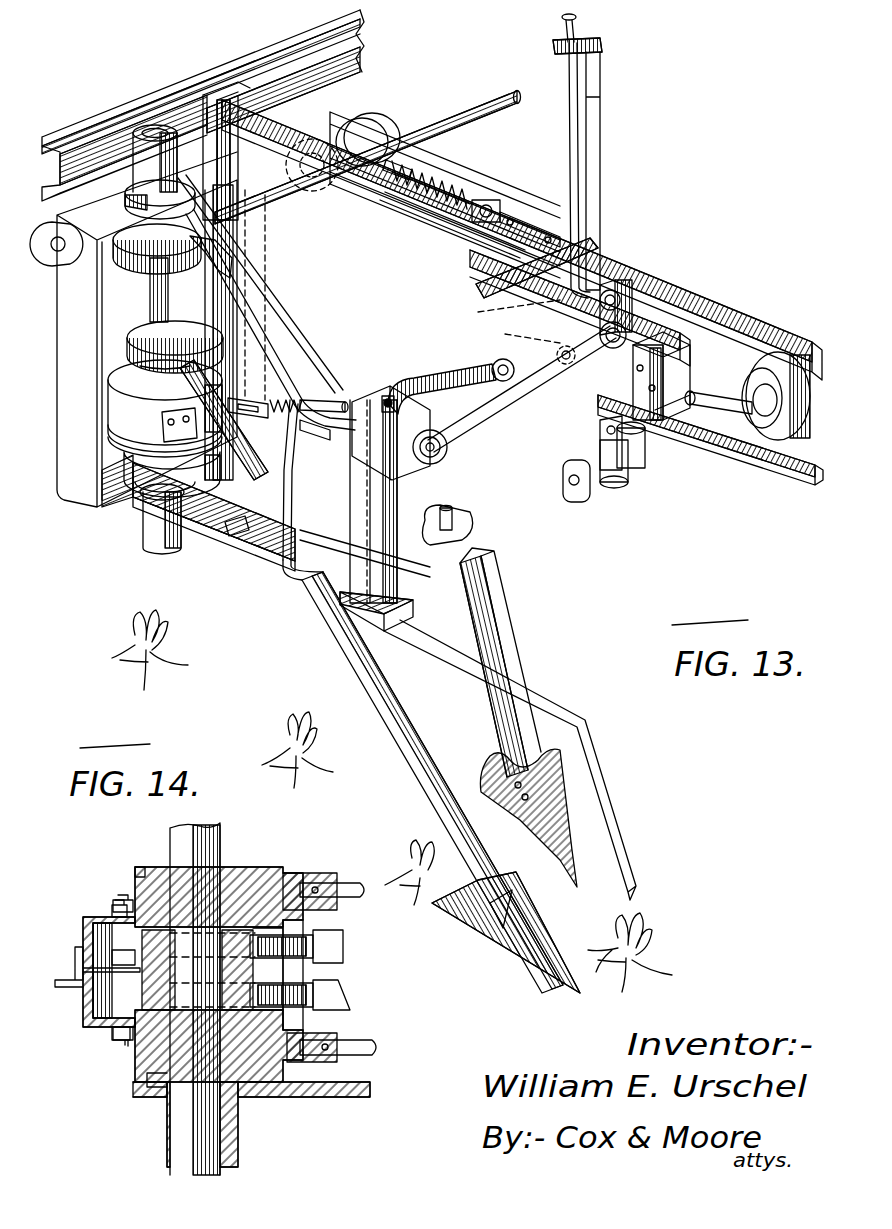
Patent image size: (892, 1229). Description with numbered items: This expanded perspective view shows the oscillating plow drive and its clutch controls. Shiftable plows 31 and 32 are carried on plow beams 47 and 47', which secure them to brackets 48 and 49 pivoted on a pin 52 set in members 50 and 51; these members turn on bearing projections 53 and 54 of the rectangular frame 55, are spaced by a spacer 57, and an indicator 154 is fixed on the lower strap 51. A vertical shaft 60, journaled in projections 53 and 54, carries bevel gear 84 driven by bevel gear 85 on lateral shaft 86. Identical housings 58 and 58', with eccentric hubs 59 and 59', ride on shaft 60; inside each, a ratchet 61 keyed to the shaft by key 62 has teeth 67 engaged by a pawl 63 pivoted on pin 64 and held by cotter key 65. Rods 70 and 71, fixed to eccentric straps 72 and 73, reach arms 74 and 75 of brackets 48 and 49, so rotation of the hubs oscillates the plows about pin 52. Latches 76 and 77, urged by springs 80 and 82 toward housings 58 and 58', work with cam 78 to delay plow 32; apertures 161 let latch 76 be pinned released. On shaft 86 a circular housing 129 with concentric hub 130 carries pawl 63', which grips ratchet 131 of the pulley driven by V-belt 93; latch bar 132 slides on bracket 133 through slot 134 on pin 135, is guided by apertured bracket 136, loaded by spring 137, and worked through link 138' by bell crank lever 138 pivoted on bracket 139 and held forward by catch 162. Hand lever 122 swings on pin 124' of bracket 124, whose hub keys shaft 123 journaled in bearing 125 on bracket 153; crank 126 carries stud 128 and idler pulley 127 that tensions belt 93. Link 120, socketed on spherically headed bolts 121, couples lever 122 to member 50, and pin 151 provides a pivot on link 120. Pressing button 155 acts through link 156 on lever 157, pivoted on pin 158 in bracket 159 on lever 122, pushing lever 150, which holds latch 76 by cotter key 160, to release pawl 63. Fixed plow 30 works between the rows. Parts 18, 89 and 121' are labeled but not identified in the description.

In FIG. 13, the plow 30 is at (76, 134).
In FIG. 13, the circular housing 129 is at (312, 98).
In FIG. 13, the ratchet 131 is at (258, 112).
In FIG. 13, the concentric hub 130 is at (290, 158).
In FIG. 13, the V-belt 93 is at (644, 290).
In FIG. 13, the pin 158 is at (692, 288).
In FIG. 13, the shaft 86 is at (488, 92).
In FIG. 13, the bearing projection 53 is at (140, 148).
In FIG. 13, the bevel gear 85 is at (234, 258).
In FIG. 13, the spring 80 is at (272, 368).
In FIG. 13, the bevel gear 84 is at (130, 260).
In FIG. 13, the shaft 60 is at (150, 304).
In FIG. 14, the shaft 60 is at (216, 832).
In FIG. 13, the eccentric hub 59 is at (163, 341).
In FIG. 14, the eccentric hub 59 is at (219, 874).
In FIG. 13, the eccentric strap 72 is at (140, 368).
In FIG. 14, the eccentric strap 72 is at (136, 900).
In FIG. 13, the housing 58 is at (140, 406).
In FIG. 14, the housing 58 is at (92, 963).
In FIG. 13, the housing 58' is at (138, 438).
In FIG. 14, the housing 58' is at (84, 1009).
In FIG. 13, the cam 78 is at (124, 466).
In FIG. 13, the latch 77 is at (200, 442).
In FIG. 14, the latch 77 is at (352, 996).
In FIG. 13, the rectangular frame 55 is at (78, 492).
In FIG. 13, the member 51 is at (268, 564).
In FIG. 14, the member 51 is at (340, 1098).
In FIG. 13, the spacer 57 is at (264, 552).
In FIG. 13, the rod 70 is at (228, 527).
In FIG. 14, the rod 70 is at (346, 884).
In FIG. 13, the eccentric strap 73 is at (197, 470).
In FIG. 14, the eccentric strap 73 is at (148, 1080).
In FIG. 13, the eccentric hub 59' is at (140, 509).
In FIG. 14, the eccentric hub 59' is at (225, 1069).
In FIG. 13, the bearing projection 54 is at (143, 541).
In FIG. 14, the bearing projection 54 is at (240, 1151).
In FIG. 13, the arm 74 is at (293, 572).
In FIG. 13, the member 50 is at (272, 400).
In FIG. 13, the circular apertures 161 is at (292, 398).
In FIG. 13, the latch 76 is at (316, 382).
In FIG. 14, the latch 76 is at (344, 932).
In FIG. 13, the spring 82 is at (314, 438).
In FIG. 13, the pawl 63' is at (368, 122).
In FIG. 13, the latch bar 132 is at (400, 160).
In FIG. 13, the slot 134 is at (422, 170).
In FIG. 13, the pin 135 is at (440, 180).
In FIG. 13, the apertured bracket 136 is at (480, 204).
In FIG. 13, the link 138' is at (533, 206).
In FIG. 13, the bell crank lever 138 is at (493, 269).
In FIG. 13, the bracket 133 is at (400, 190).
In FIG. 13, the spring 137 is at (443, 200).
In FIG. 13, the button 155 is at (578, 18).
In FIG. 13, the link 156 is at (580, 98).
In FIG. 13, the hand lever 122 is at (601, 134).
In FIG. 13, the lever 157 is at (636, 296).
In FIG. 13, the bracket 159 is at (620, 290).
In FIG. 13, the catch 162 is at (500, 309).
In FIG. 13, the bracket 139 is at (516, 330).
In FIG. 13, the plate 18 is at (668, 322).
In FIG. 14, the plate 18 is at (72, 990).
In FIG. 13, the idler pulley 127 is at (765, 360).
In FIG. 13, the crank 126 is at (740, 375).
In FIG. 13, the bracket 153 is at (728, 420).
In FIG. 13, the bearing 125 is at (650, 452).
In FIG. 13, the bracket 124 is at (641, 486).
In FIG. 13, the pin 124' is at (574, 443).
In FIG. 13, the shaft 123 is at (576, 494).
In FIG. 13, the stud 128 is at (690, 450).
In FIG. 13, the link 120 is at (488, 418).
In FIG. 13, the bearing 121' is at (583, 364).
In FIG. 13, the pin 52 is at (372, 405).
In FIG. 13, the spherically headed bolts 121 is at (454, 449).
In FIG. 13, the lever 150 is at (432, 378).
In FIG. 13, the pin 151 is at (495, 360).
In FIG. 13, the cotter key 160 is at (388, 396).
In FIG. 13, the bracket 49 is at (398, 498).
In FIG. 13, the arm 75 is at (473, 532).
In FIG. 13, the rod 71 is at (452, 512).
In FIG. 14, the rod 71 is at (382, 1047).
In FIG. 13, the bracket 48 is at (415, 610).
In FIG. 13, the indicator 154 is at (600, 784).
In FIG. 13, the plow beam 47 is at (423, 782).
In FIG. 13, the plow beam 47' is at (514, 662).
In FIG. 13, the plow 32 is at (550, 750).
In FIG. 13, the plow 31 is at (482, 875).
In FIG. 13, the bearing 89 is at (60, 270).
In FIG. 14, the key 62 is at (248, 905).
In FIG. 14, the ratchet 61 is at (250, 928).
In FIG. 14, the teeth 67 is at (110, 1020).
In FIG. 14, the cotter key 65 is at (112, 908).
In FIG. 14, the pin 64 is at (114, 898).
In FIG. 14, the pawl 63 is at (326, 973).